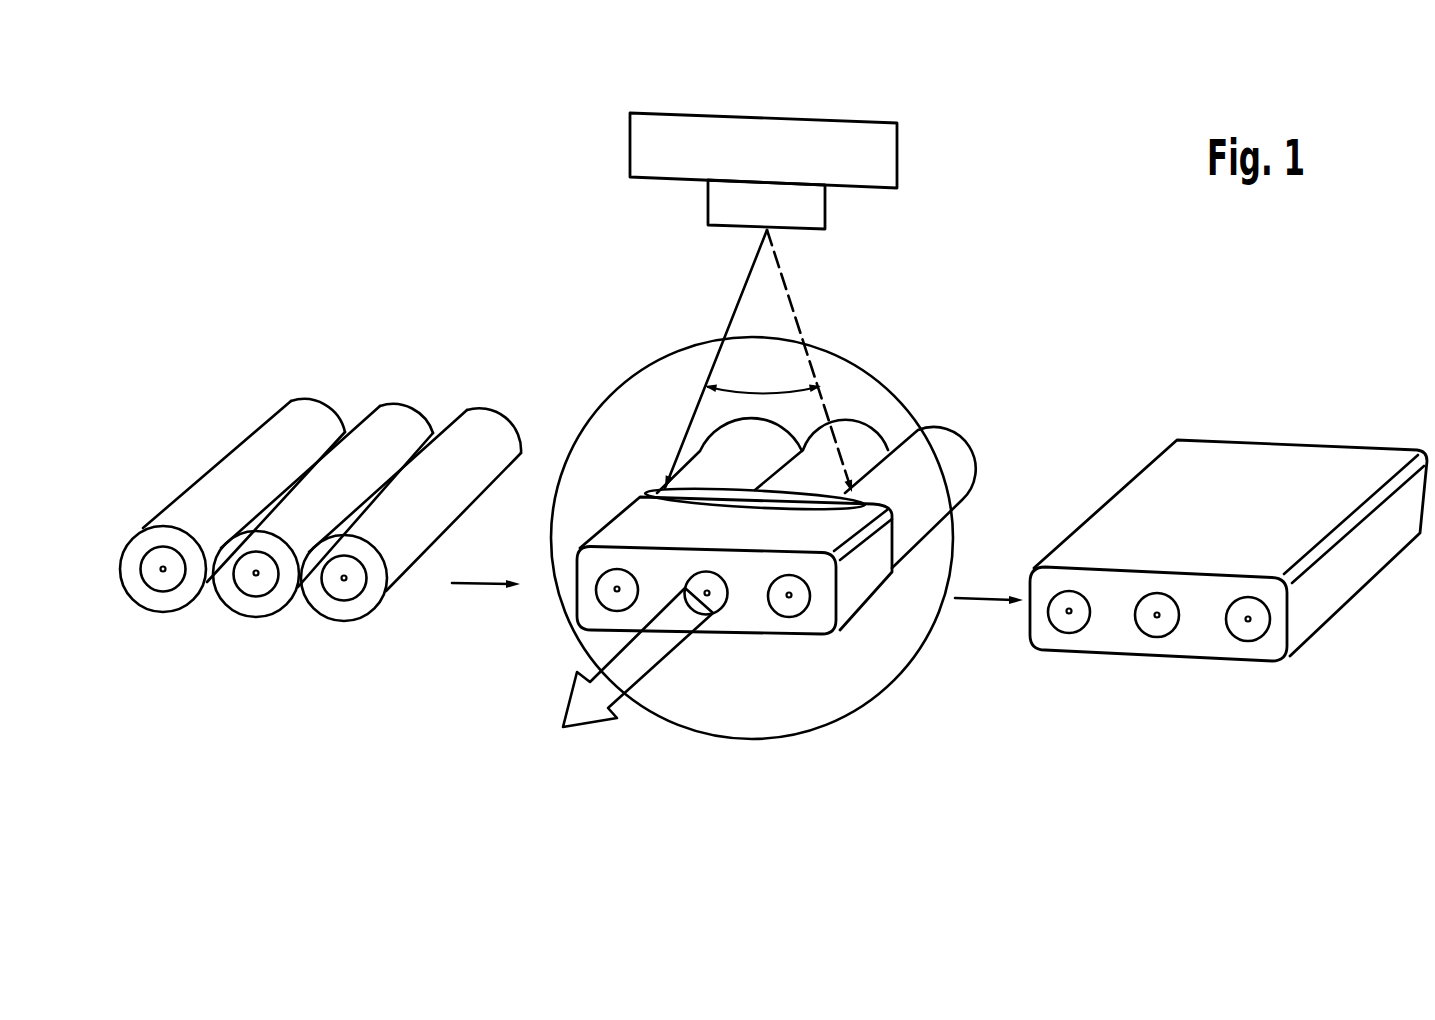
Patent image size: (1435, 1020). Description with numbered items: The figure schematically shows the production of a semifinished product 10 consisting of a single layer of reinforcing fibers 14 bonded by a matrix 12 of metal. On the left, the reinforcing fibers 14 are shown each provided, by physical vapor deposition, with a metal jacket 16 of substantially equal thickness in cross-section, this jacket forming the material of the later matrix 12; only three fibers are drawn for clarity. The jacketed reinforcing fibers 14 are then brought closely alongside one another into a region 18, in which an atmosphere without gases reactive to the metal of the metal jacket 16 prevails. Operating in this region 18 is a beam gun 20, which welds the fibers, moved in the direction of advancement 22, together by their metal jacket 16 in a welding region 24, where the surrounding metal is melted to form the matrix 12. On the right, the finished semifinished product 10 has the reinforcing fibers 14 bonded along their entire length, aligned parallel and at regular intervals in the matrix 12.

The semifinished product 10 is at (1265, 428).
The matrix 12 is at (817, 624).
The reinforcing fibers 14 is at (157, 580).
The metal jacket 16 is at (174, 598).
The region 18 is at (875, 378).
The beam gun 20 is at (773, 136).
The direction of advancement 22 is at (590, 730).
The welding region 24 is at (722, 498).